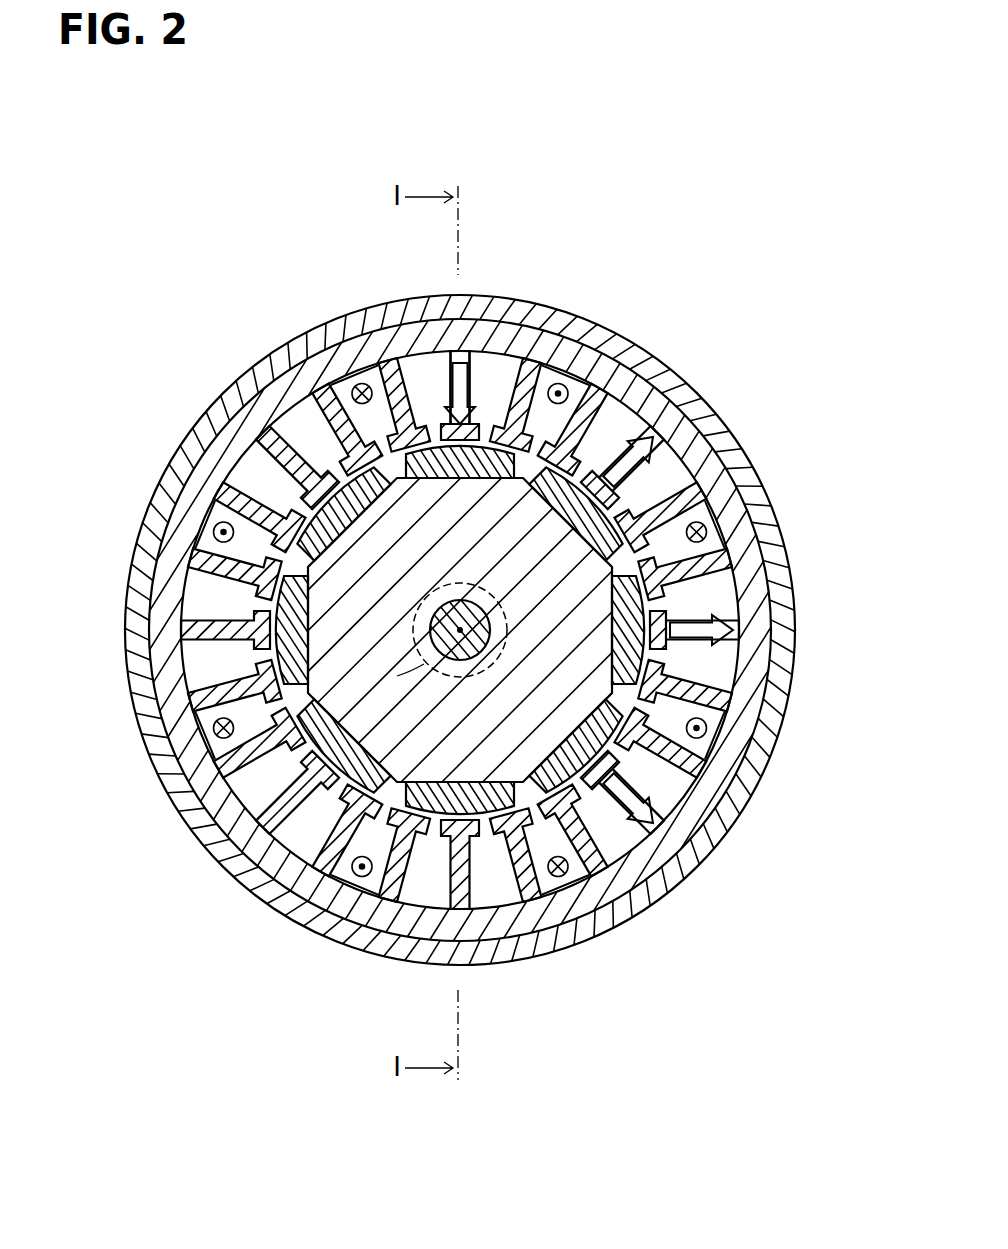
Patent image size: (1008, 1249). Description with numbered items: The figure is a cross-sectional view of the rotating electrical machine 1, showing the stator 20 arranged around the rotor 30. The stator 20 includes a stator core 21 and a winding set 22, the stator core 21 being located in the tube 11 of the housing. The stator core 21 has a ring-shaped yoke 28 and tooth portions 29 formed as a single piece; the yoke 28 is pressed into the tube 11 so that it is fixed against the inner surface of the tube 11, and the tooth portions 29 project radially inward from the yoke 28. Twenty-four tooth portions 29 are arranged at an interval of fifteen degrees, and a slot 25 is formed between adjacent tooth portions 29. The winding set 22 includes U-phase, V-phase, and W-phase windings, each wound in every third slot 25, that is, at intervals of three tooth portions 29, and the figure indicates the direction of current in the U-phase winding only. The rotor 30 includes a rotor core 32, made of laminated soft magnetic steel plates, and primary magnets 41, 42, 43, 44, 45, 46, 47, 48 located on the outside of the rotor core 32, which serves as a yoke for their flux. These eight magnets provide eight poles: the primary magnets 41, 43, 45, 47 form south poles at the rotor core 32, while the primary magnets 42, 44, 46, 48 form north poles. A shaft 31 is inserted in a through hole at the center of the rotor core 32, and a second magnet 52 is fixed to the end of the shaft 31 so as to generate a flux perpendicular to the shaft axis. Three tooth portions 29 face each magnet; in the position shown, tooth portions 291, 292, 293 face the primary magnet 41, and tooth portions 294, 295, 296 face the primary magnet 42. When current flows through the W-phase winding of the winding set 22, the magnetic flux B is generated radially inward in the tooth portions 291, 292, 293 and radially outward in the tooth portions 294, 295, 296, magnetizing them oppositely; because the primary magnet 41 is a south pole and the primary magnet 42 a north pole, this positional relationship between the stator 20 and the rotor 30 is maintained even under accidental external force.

The rotating electrical machine 1 is at (254, 222).
The tube 11 is at (524, 505).
The stator 20 is at (648, 378).
The stator core 21 is at (211, 277).
The winding set 22 is at (356, 383).
The slot 25 is at (338, 415).
The yoke 28 is at (203, 455).
The tooth portions 29 is at (258, 427).
The tooth portion 291 is at (400, 422).
The tooth portion 292 is at (461, 356).
The tooth portion 293 is at (524, 395).
The tooth portion 294 is at (606, 400).
The tooth portion 295 is at (672, 497).
The tooth portion 296 is at (700, 563).
The rotor 30 is at (638, 611).
The shaft 31 is at (491, 623).
The rotor core 32 is at (593, 500).
The primary magnet 41 is at (480, 436).
The primary magnet 42 is at (645, 472).
The primary magnet 43 is at (712, 646).
The primary magnet 44 is at (652, 808).
The primary magnet 45 is at (440, 815).
The primary magnet 46 is at (284, 798).
The primary magnet 47 is at (292, 656).
The primary magnet 48 is at (324, 442).
The second magnet 52 is at (500, 667).
The magnetic flux B is at (455, 413).